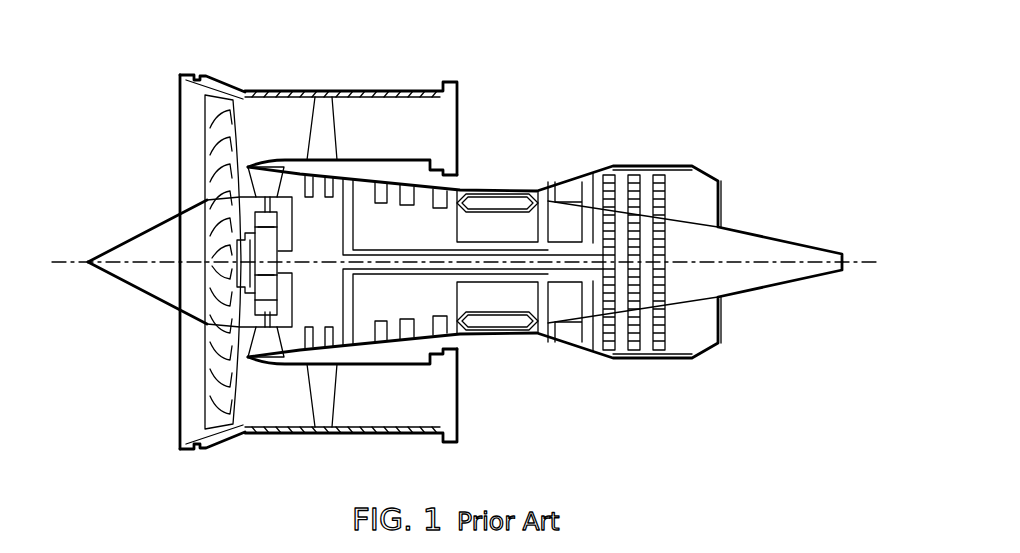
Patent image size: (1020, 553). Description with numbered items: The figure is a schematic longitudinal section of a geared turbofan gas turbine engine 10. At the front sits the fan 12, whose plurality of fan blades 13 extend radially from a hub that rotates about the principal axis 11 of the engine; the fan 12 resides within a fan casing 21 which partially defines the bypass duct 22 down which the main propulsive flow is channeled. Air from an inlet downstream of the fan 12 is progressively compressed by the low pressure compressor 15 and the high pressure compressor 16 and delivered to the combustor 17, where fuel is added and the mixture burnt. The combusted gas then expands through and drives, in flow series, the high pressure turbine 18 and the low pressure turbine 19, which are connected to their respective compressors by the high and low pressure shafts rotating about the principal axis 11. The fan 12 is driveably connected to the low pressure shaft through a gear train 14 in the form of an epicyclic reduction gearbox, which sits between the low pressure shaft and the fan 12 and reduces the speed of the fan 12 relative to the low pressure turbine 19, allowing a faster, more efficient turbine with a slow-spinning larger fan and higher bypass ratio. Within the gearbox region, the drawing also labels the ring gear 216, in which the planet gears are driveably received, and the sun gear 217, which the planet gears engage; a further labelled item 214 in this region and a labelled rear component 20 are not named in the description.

The geared gas turbine engine 10 is at (721, 113).
The principal axis 11 is at (72, 262).
The fan 12 is at (158, 127).
The fan blades 13 is at (222, 382).
The gear train 14 is at (276, 325).
The low pressure compressor 15 is at (320, 185).
The high pressure compressor 16 is at (443, 221).
The combustor 17 is at (493, 323).
The high pressure turbine 18 is at (591, 175).
The low pressure turbine 19 is at (637, 173).
The exhaust nozzle 20 is at (707, 208).
The fan casing 21 is at (368, 90).
The bypass duct 22 is at (435, 115).
The gearbox 214 is at (265, 288).
The ring gear 216 is at (267, 222).
The sun gear 217 is at (265, 268).